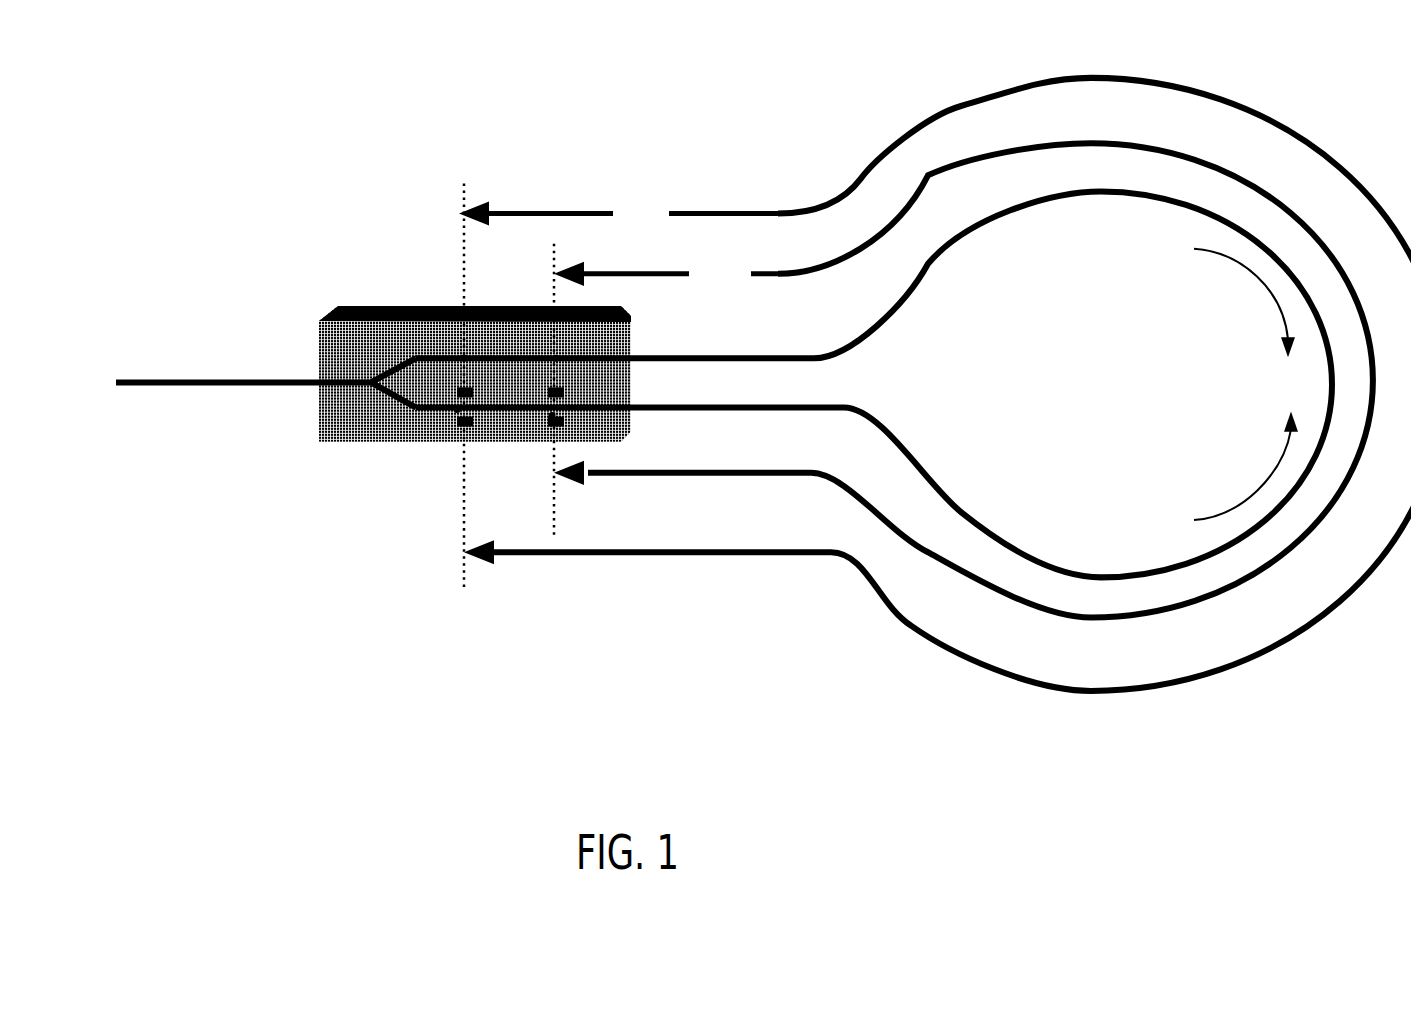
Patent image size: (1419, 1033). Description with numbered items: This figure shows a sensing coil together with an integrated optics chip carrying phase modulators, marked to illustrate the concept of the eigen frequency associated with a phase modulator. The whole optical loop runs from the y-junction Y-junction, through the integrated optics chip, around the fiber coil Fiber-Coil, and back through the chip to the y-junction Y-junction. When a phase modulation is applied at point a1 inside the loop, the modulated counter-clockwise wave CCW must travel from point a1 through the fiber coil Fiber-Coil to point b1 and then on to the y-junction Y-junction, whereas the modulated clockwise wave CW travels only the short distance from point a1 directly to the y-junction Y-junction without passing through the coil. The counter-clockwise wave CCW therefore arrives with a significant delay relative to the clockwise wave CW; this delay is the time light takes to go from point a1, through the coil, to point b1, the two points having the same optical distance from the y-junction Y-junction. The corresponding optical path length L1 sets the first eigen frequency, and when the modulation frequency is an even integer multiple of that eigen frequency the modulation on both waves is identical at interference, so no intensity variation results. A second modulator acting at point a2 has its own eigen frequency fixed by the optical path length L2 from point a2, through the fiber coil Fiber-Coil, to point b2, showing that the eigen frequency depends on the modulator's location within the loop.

The y-junction Y-junction is at (345, 355).
The fiber coil Fiber-Coil is at (1000, 499).
The optical path length L1 is at (618, 385).
The optical path length L2 is at (666, 389).
The point b1 is at (463, 354).
The point b2 is at (555, 354).
The point a1 is at (456, 405).
The point a2 is at (551, 411).
The clockwise optical wave CW is at (1209, 293).
The counter-clockwise optical wave CCW is at (1194, 476).